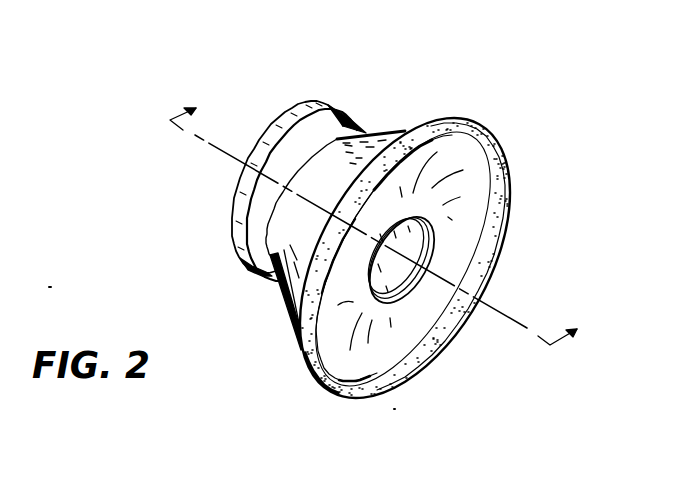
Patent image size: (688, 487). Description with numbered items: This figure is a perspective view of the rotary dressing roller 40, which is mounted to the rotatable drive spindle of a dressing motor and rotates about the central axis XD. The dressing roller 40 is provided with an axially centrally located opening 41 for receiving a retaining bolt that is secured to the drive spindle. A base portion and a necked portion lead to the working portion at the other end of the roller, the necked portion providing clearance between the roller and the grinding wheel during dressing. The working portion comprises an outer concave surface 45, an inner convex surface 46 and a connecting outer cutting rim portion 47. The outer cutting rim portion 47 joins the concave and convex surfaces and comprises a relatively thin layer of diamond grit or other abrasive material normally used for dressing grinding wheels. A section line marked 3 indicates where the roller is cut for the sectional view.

The rotary dressing roller 40 is at (494, 96).
The axially centrally located opening 41 is at (398, 276).
The outer concave surface 45 is at (412, 346).
The inner convex surface 46 is at (387, 134).
The outer cutting rim portion 47 is at (505, 205).
The section line 3- 3 is at (192, 180).